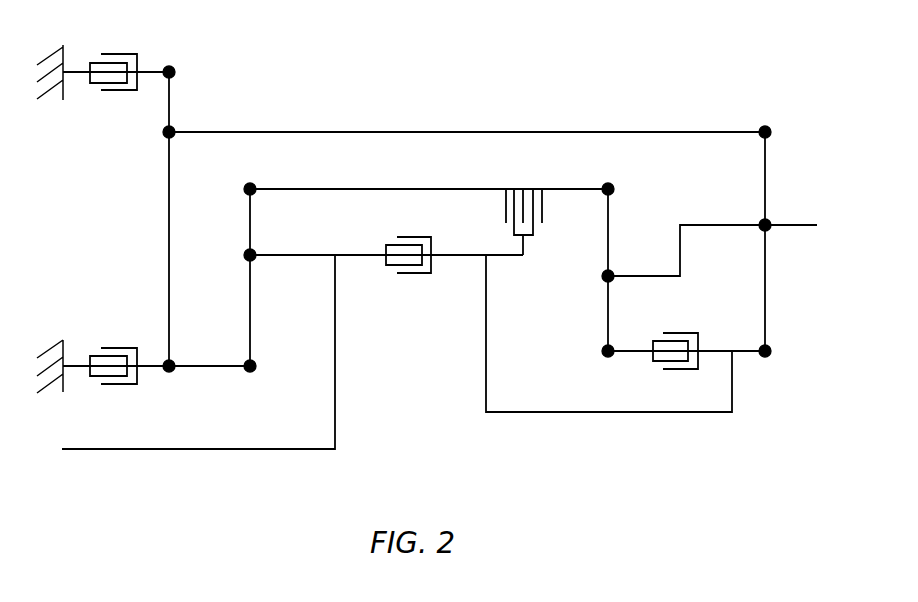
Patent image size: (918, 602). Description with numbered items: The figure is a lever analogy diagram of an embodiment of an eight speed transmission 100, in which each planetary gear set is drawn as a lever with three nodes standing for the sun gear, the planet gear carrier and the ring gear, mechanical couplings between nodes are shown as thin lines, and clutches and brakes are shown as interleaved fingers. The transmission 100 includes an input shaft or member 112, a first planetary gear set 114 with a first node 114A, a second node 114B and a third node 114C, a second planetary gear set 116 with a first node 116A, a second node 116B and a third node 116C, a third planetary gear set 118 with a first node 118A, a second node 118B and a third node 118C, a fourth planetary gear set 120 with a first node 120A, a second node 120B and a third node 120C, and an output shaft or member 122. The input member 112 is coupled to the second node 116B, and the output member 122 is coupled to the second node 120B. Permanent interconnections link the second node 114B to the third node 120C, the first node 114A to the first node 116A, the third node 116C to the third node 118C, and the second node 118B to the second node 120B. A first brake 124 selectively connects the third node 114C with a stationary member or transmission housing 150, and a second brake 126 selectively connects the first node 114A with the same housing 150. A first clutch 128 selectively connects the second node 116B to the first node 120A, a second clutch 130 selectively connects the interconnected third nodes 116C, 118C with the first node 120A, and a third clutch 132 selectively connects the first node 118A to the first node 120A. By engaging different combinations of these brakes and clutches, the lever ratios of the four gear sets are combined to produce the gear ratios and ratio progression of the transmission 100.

The eight speed transmission 100 is at (703, 68).
The input shaft or member 112 is at (163, 451).
The first planetary gear set 114 is at (193, 105).
The first node of the first planetary gear set 114A is at (170, 373).
The second node of the first planetary gear set 114B is at (163, 132).
The third node of the first planetary gear set 114C is at (172, 66).
The second planetary gear set 116 is at (236, 470).
The first node of the second planetary gear set 116A is at (251, 373).
The second node of the second planetary gear set 116B is at (246, 254).
The third node of the second planetary gear set 116C is at (246, 188).
The third planetary gear set 118 is at (590, 112).
The first node of the third planetary gear set 118A is at (604, 352).
The second node of the third planetary gear set 118B is at (604, 277).
The third node of the third planetary gear set 118C is at (613, 187).
The fourth planetary gear set 120 is at (778, 327).
The first node of the fourth planetary gear set 120A is at (766, 358).
The second node of the fourth planetary gear set 120B is at (762, 223).
The third node of the fourth planetary gear set 120C is at (767, 127).
The output shaft or member 122 is at (794, 224).
The first brake 124 is at (120, 54).
The second brake 126 is at (120, 347).
The first clutch 128 is at (413, 274).
The second clutch 130 is at (506, 199).
The third clutch 132 is at (690, 333).
The stationary member or transmission housing 150 is at (53, 97).